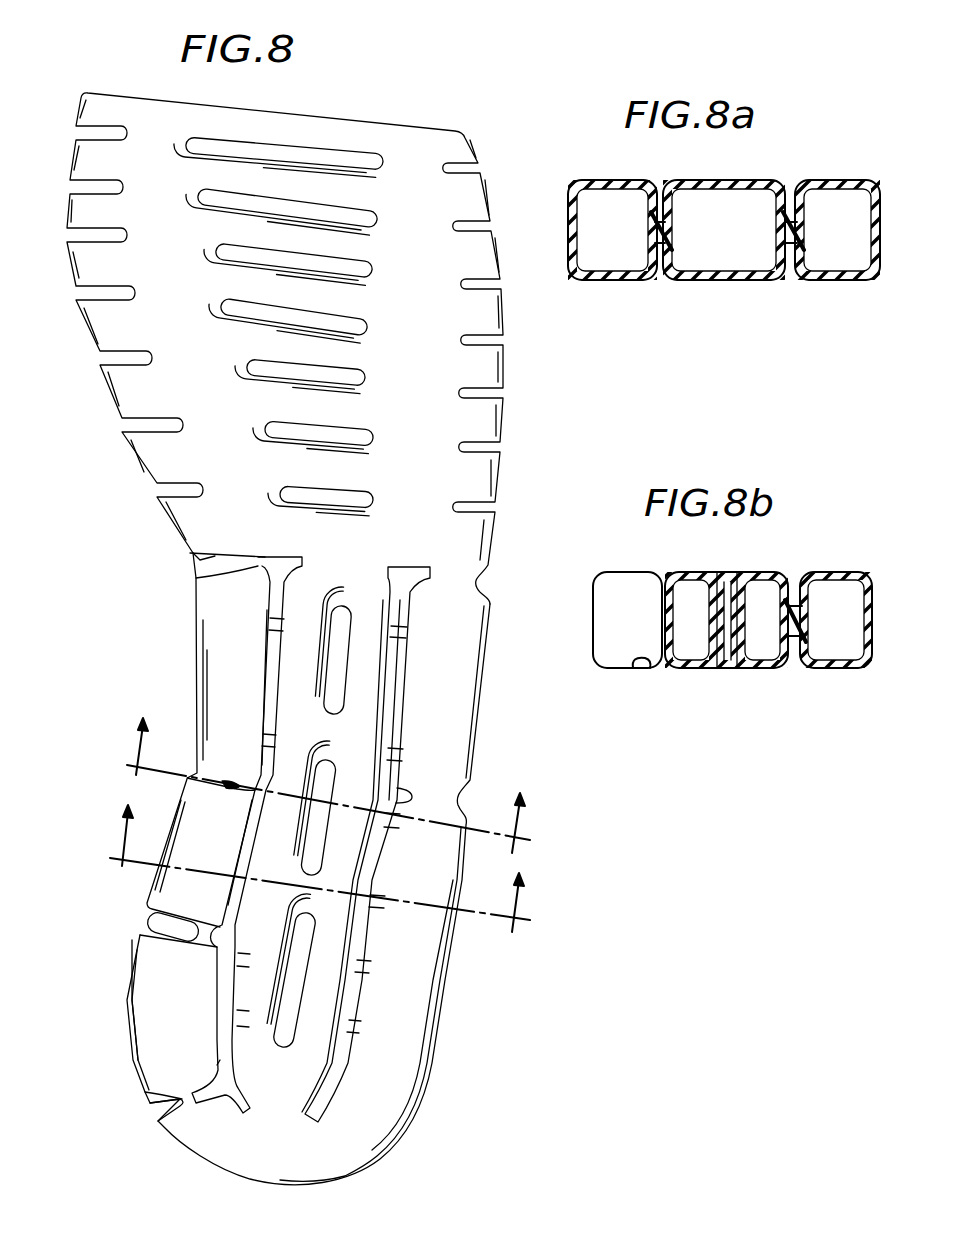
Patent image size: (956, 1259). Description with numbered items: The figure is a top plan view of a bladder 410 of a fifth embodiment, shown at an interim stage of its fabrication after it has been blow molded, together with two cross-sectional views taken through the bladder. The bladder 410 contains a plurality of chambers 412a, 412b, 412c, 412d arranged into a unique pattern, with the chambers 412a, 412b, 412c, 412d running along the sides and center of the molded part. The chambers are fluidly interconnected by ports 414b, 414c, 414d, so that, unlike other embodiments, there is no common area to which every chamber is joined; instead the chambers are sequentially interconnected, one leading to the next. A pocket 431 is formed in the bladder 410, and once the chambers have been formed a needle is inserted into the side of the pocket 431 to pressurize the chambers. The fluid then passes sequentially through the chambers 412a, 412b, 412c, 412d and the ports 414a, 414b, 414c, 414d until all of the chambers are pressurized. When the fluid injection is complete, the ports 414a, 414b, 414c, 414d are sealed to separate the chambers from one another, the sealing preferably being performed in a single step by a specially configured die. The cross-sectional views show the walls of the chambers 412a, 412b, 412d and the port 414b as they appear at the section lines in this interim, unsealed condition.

In FIG. 8, the bladder 410 is at (138, 563).
In FIG. 8, the pocket 431 is at (197, 554).
In FIG. 8, the chamber 412a is at (215, 673).
In FIG. 8B, the chamber 412a is at (627, 583).
In FIG. 8, the chamber 412b is at (208, 830).
In FIG. 8A, the chamber 412b is at (615, 203).
In FIG. 8, the chamber 412c is at (165, 990).
In FIG. 8, the chamber 412d is at (460, 369).
In FIG. 8A, the chamber 412d is at (718, 255).
In FIG. 8B, the chamber 412d is at (752, 655).
In FIG. 8, the port 414a is at (256, 576).
In FIG. 8, the port 414b is at (240, 784).
In FIG. 8B, the port 414b is at (632, 662).
In FIG. 8, the port 414c is at (146, 926).
In FIG. 8, the port 414d is at (185, 1095).